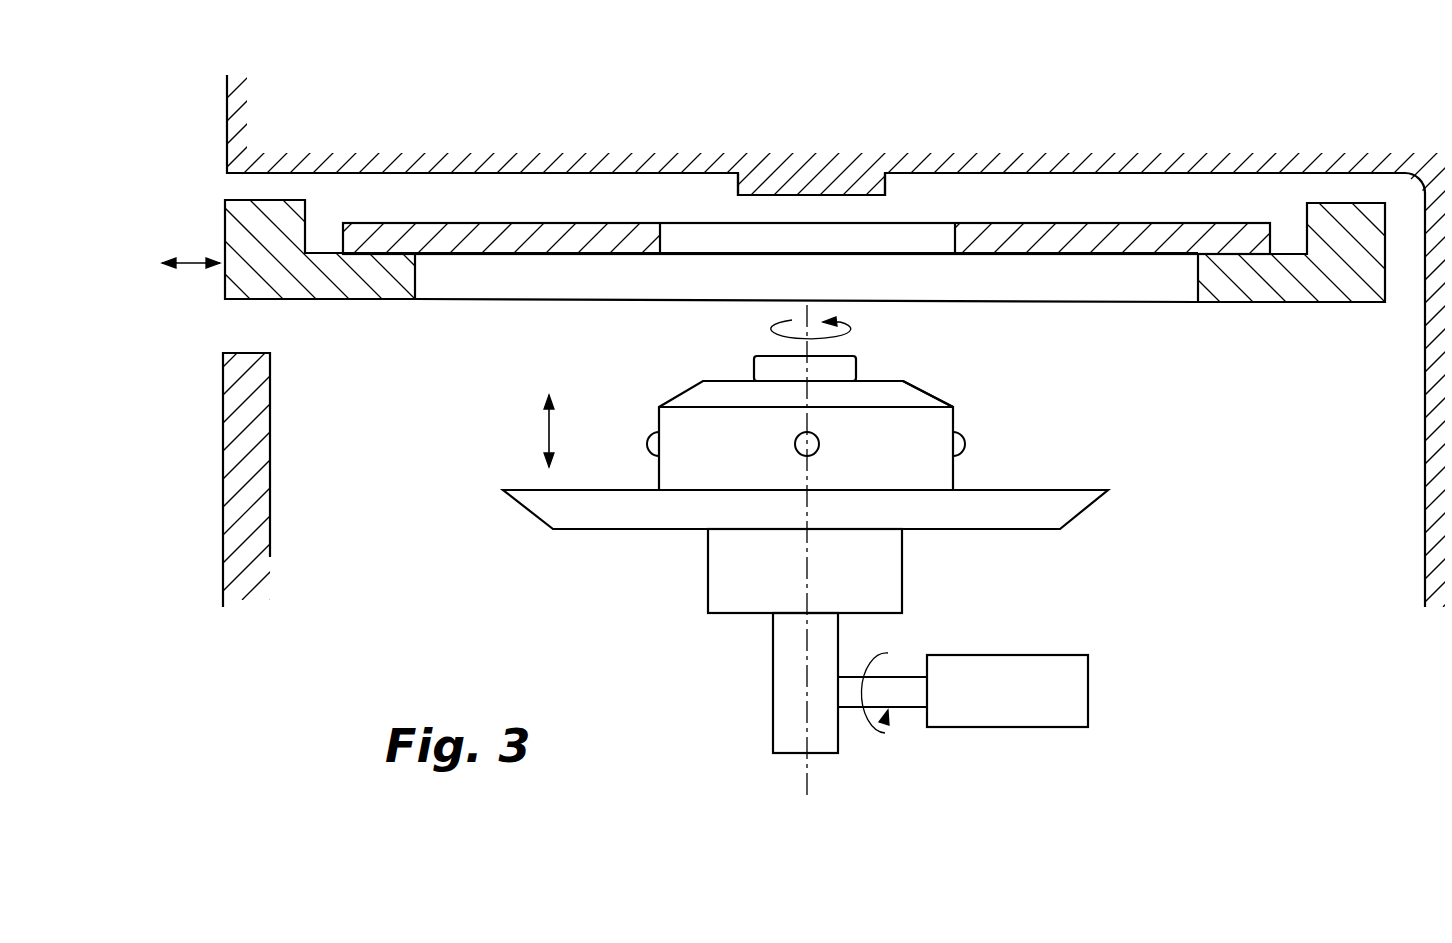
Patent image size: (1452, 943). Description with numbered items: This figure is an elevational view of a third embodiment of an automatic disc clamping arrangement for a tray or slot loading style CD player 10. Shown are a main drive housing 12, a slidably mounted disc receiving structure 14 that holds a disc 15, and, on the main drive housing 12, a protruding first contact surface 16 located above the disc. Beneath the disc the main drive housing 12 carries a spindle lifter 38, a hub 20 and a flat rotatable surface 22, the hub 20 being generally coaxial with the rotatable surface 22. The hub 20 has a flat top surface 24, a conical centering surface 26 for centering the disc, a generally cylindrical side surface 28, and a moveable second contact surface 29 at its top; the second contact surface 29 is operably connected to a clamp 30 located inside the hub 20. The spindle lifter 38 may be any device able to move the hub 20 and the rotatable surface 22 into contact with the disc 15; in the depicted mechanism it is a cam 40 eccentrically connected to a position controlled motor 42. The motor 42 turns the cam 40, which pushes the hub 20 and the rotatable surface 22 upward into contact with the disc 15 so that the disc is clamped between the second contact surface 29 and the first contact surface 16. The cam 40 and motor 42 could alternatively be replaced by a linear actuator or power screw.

The CD player 10 is at (932, 95).
The main drive housing 12 is at (459, 123).
The disc receiving structure 14 is at (292, 305).
The disc 15 is at (508, 236).
The first contact surface 16 is at (800, 182).
The hub 20 is at (1053, 410).
The rotatable surface 22 is at (1000, 488).
The flat top surface 24 is at (886, 380).
The conical centering surface 26 is at (928, 393).
The cylindrical side surface 28 is at (955, 418).
The second contact surface 29 is at (835, 352).
The clamp 30 is at (635, 442).
The spindle lifter 38 is at (760, 679).
The cam 40 is at (789, 706).
The motor 42 is at (984, 706).